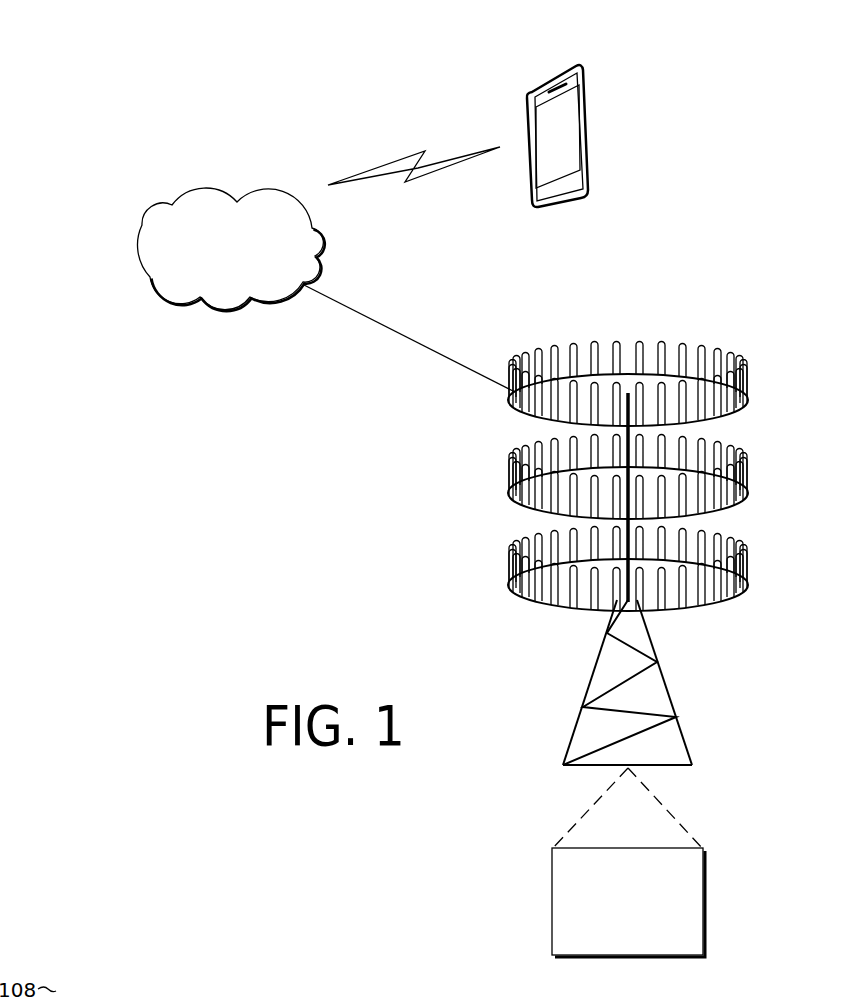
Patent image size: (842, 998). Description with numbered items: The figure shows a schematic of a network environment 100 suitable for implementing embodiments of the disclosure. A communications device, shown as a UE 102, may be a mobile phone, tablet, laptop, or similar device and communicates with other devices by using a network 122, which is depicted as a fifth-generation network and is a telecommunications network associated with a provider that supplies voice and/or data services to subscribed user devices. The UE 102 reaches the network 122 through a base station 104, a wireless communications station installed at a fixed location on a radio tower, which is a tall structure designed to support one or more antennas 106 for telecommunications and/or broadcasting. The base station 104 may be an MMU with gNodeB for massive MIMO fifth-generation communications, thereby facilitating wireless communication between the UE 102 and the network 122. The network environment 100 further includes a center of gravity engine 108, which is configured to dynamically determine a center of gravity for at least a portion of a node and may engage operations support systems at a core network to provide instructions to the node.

The network environment 100 is at (100, 78).
The UE 102 is at (553, 76).
The base station 104 is at (672, 688).
The antennas 106 is at (645, 342).
The center of gravity engine 108 is at (552, 898).
The network 122 is at (208, 188).